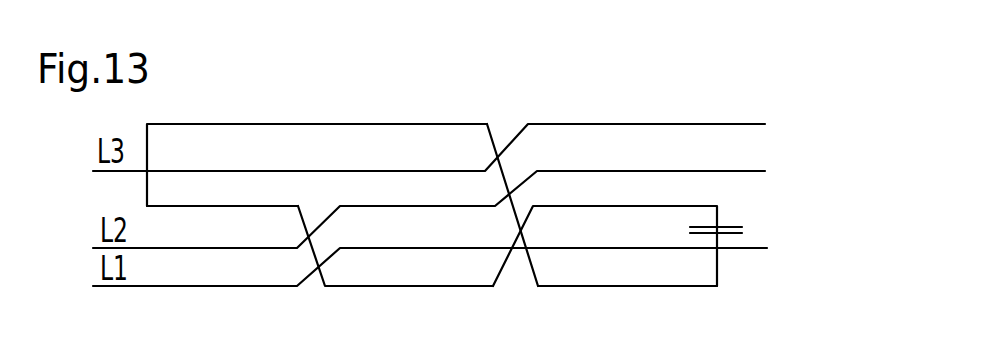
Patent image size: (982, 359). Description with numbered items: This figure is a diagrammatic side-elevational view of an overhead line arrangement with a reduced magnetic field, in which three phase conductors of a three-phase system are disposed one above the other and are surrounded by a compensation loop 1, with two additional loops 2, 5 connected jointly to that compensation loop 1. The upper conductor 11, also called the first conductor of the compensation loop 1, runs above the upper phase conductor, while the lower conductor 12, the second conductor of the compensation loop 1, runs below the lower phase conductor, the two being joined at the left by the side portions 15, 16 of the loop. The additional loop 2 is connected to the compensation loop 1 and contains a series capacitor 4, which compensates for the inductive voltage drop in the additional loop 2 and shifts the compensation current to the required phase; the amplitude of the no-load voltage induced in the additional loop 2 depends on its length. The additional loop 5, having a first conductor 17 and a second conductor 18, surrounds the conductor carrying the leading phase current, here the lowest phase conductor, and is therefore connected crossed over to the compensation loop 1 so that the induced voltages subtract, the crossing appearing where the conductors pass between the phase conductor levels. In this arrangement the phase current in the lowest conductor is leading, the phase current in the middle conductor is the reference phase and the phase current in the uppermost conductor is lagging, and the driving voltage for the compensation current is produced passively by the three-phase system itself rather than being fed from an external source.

The compensation loop 1 is at (428, 124).
The additional loop 2 is at (217, 124).
The series capacitor 4 is at (718, 228).
The additional loop 5 is at (636, 206).
The upper conductor 11 is at (466, 124).
The lower conductor 12 is at (392, 287).
The upper left section 15 is at (177, 124).
The middle left section 16 is at (150, 207).
The first conductor 17 is at (672, 206).
The second conductor 18 is at (643, 287).